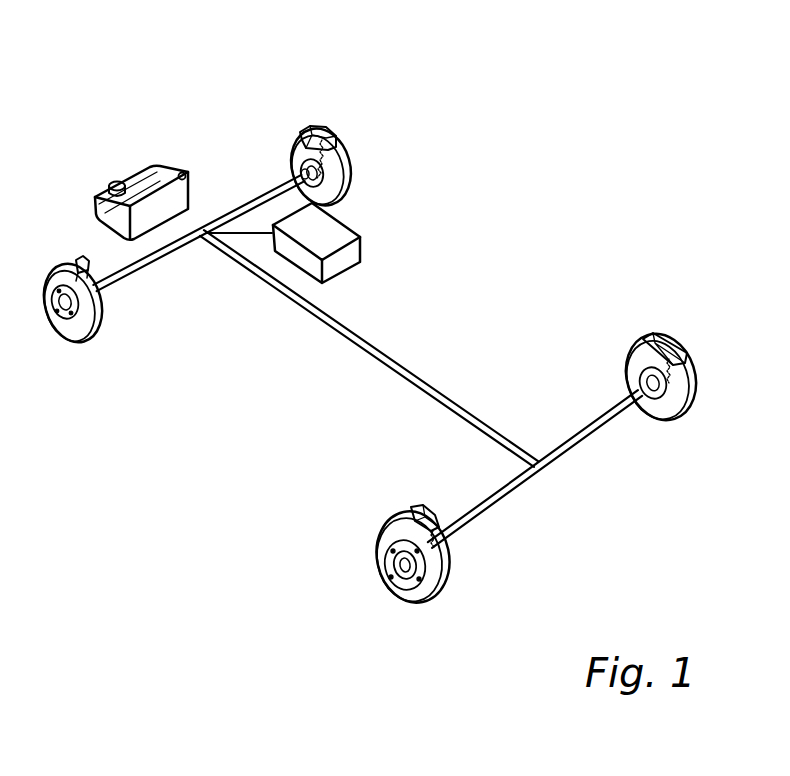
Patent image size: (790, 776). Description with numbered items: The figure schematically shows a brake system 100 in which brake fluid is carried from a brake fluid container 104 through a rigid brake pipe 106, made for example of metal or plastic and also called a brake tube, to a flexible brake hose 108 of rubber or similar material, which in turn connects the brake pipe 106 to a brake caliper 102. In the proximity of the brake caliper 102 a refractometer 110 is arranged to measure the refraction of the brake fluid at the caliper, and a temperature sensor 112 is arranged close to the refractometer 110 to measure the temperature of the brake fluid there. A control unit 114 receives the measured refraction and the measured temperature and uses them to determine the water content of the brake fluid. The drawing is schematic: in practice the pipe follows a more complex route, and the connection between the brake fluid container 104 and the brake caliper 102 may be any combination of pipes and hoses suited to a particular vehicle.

The brake system 100 is at (556, 108).
The brake caliper 102 is at (357, 134).
The brake fluid container 104 is at (152, 167).
The brake pipe 106 is at (202, 228).
The brake hose 108 is at (301, 138).
The refractometer 110 is at (322, 131).
The temperature sensor 112 is at (323, 140).
The control unit 114 is at (353, 250).